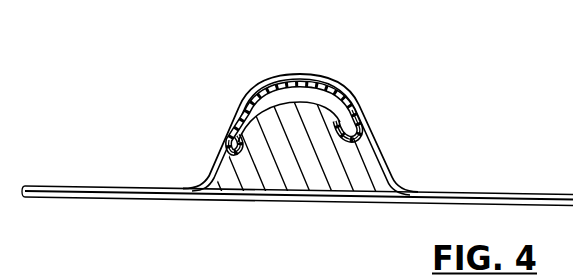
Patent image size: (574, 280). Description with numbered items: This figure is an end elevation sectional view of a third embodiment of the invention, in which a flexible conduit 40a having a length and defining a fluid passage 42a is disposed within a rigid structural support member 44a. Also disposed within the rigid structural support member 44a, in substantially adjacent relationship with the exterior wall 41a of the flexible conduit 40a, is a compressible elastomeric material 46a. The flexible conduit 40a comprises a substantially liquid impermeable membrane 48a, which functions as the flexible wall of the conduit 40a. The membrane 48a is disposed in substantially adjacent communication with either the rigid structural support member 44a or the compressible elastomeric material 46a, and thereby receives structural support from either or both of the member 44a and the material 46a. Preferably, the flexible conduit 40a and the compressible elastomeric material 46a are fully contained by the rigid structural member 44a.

The flexible conduit 40a is at (308, 117).
The exterior wall 41a is at (242, 146).
The fluid passage 42a is at (334, 97).
The rigid structural support member 44a is at (278, 80).
The compressible elastomeric material 46a is at (301, 167).
The liquid impermeable membrane 48a is at (233, 113).